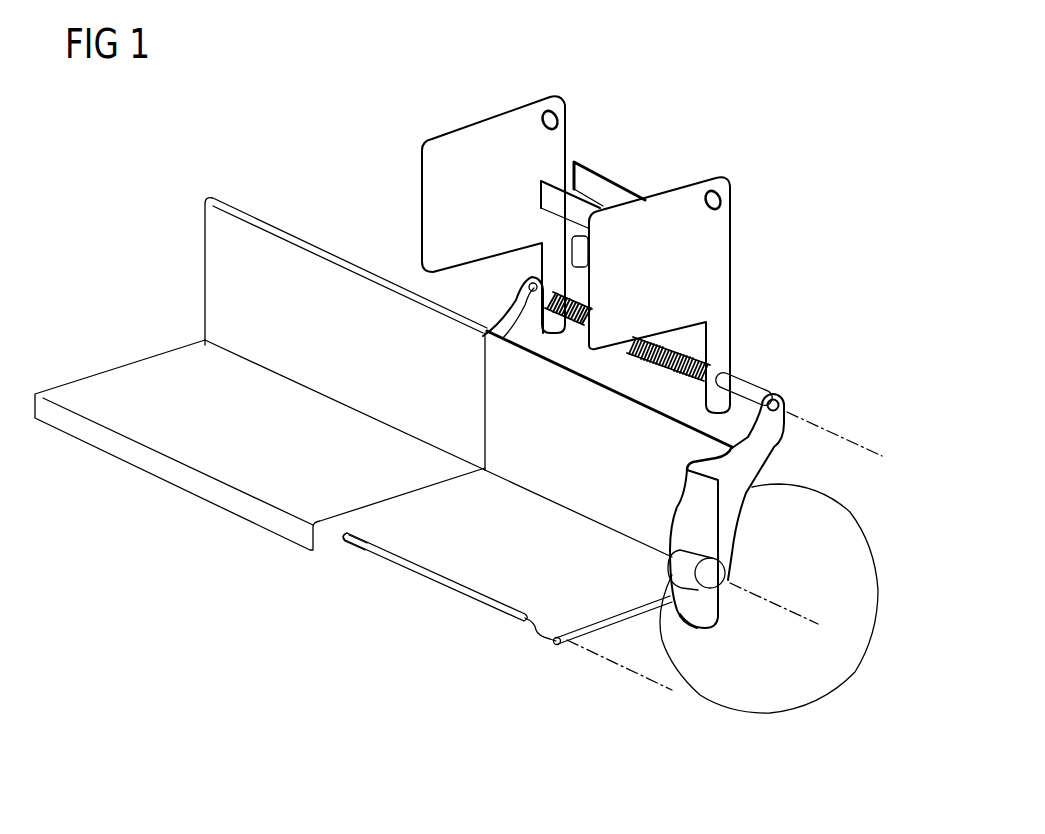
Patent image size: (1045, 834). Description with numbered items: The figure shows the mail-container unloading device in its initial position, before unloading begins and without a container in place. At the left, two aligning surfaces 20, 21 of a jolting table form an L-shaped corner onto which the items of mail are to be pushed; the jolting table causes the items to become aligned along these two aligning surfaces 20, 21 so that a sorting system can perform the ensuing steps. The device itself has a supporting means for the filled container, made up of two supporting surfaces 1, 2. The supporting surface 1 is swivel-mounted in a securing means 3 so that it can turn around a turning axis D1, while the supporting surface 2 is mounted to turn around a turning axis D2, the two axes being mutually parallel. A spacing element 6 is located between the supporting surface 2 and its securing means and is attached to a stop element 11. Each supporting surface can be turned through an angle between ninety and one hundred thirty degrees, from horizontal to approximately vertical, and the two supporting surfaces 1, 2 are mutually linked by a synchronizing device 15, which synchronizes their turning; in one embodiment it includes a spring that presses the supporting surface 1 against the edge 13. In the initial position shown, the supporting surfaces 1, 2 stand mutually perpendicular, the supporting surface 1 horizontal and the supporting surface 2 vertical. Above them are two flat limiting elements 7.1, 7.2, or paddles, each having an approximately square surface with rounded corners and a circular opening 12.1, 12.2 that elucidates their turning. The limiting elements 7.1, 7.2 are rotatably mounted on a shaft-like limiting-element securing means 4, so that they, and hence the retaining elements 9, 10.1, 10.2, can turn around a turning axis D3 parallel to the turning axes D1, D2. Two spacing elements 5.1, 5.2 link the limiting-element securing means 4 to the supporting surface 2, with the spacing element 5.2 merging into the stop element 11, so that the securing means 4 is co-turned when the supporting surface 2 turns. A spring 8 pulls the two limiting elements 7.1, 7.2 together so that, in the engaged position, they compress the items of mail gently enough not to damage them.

The supporting surface 1 is at (437, 567).
The supporting surface 2 is at (663, 430).
The securing means 3 is at (358, 550).
The limiting-element securing means 4 is at (745, 388).
The spacing element 5.1 is at (515, 322).
The spacing element 5.2 is at (757, 440).
The spacing element 6 is at (714, 586).
The limiting element 7.1 is at (555, 158).
The limiting element 7.2 is at (712, 248).
The spring 8 is at (688, 345).
The retaining element 9 is at (552, 200).
The retaining element 10.1 is at (617, 197).
The retaining element 10.2 is at (580, 238).
The stop element 11 is at (707, 517).
The circular opening 12.1 is at (590, 92).
The circular opening 12.2 is at (722, 193).
The edge 13 is at (560, 507).
The synchronizing device 15 is at (880, 547).
The aligning surface 20 is at (123, 457).
The aligning surface 21 is at (293, 232).
The turning axis D1 is at (625, 670).
The turning axis D2 is at (787, 607).
The turning axis D3 is at (830, 427).